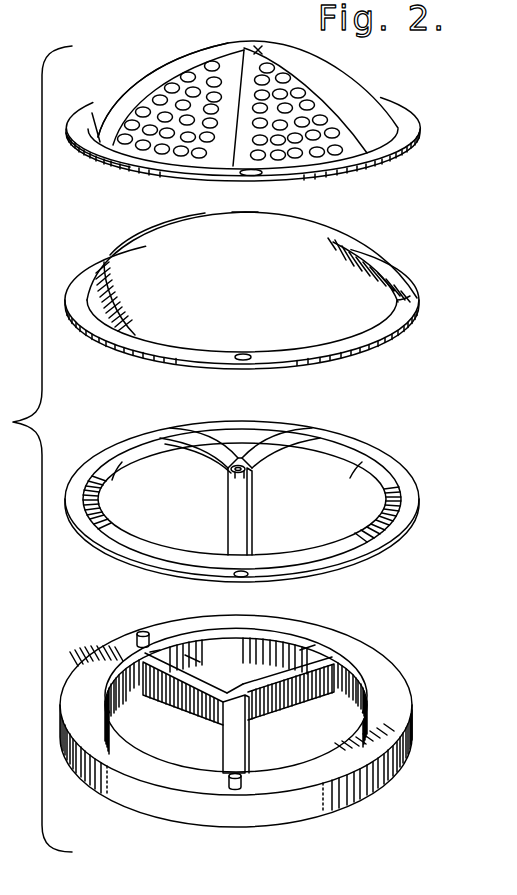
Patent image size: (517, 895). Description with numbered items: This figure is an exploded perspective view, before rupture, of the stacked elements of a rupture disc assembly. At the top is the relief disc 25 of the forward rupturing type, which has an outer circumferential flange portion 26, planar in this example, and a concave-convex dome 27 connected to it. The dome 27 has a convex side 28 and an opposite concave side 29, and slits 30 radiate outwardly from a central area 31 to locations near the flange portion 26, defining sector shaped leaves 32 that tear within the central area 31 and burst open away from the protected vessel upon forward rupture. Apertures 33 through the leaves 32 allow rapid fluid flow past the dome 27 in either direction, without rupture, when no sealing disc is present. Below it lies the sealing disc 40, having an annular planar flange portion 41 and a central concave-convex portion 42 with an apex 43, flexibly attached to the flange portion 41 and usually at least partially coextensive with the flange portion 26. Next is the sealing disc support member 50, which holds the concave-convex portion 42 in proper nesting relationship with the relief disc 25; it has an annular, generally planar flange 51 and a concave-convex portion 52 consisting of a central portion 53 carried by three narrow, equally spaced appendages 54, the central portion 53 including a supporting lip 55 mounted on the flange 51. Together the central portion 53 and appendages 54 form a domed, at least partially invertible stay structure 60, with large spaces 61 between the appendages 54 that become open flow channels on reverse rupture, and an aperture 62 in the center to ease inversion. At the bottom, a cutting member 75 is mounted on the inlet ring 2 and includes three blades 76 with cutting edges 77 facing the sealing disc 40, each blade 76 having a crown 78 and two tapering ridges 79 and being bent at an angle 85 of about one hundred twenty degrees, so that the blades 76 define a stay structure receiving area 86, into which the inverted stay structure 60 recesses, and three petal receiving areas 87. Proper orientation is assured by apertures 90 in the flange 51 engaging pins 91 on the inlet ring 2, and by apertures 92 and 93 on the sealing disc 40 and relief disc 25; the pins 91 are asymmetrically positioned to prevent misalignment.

The inlet ring 2 is at (385, 678).
The relief disc 25 is at (413, 115).
The flange portion 26 is at (394, 160).
The dome 27 is at (133, 82).
The convex side 28 is at (160, 63).
The concave side 29 is at (110, 152).
The slits 30 is at (185, 63).
The central area 31 is at (244, 44).
The sector shaped leaves 32 is at (258, 49).
The apertures 33 is at (300, 90).
The sealing disc 40 is at (387, 266).
The flange portion 41 is at (413, 310).
The concave-convex portion 42 is at (152, 237).
The apex 43 is at (241, 223).
The sealing disc support member 50 is at (388, 523).
The flange 51 is at (411, 498).
The concave-convex portion 52 is at (253, 513).
The central portion 53 is at (250, 468).
The appendages 54 is at (215, 456).
The supporting lip 55 is at (348, 543).
The stay structure 60 is at (226, 486).
The spaces 61 is at (122, 483).
The aperture 62 is at (242, 478).
The cutting member 75 is at (277, 705).
The blades 76 is at (198, 706).
The cutting edges 77 is at (195, 658).
The crown 78 is at (243, 678).
The tapering ridges 79 is at (197, 658).
The angle 85 is at (220, 723).
The stay structure receiving area 86 is at (240, 745).
The petal receiving areas 87 is at (139, 742).
The apertures 90 is at (243, 578).
The pins 91 is at (248, 784).
The apertures 92 is at (243, 353).
The apertures 93 is at (269, 176).